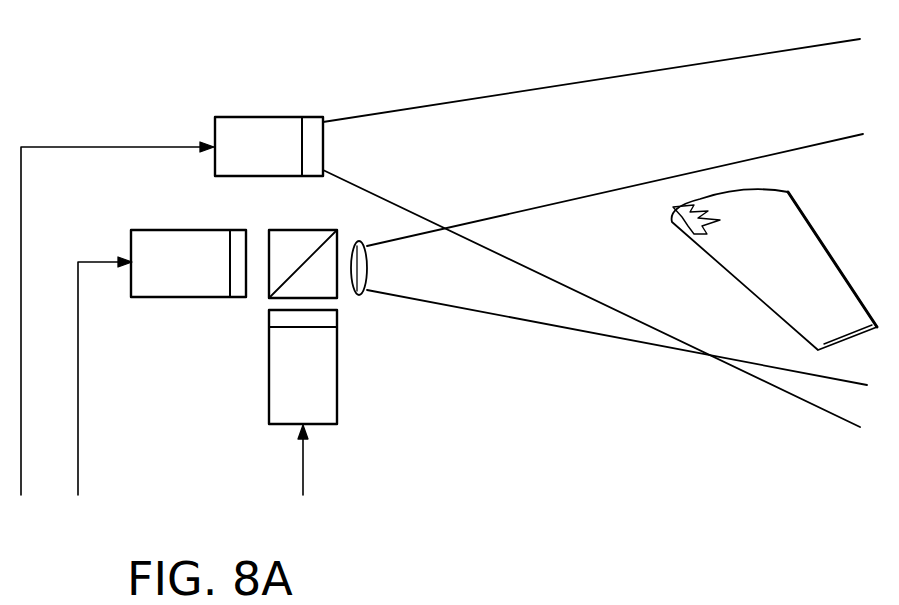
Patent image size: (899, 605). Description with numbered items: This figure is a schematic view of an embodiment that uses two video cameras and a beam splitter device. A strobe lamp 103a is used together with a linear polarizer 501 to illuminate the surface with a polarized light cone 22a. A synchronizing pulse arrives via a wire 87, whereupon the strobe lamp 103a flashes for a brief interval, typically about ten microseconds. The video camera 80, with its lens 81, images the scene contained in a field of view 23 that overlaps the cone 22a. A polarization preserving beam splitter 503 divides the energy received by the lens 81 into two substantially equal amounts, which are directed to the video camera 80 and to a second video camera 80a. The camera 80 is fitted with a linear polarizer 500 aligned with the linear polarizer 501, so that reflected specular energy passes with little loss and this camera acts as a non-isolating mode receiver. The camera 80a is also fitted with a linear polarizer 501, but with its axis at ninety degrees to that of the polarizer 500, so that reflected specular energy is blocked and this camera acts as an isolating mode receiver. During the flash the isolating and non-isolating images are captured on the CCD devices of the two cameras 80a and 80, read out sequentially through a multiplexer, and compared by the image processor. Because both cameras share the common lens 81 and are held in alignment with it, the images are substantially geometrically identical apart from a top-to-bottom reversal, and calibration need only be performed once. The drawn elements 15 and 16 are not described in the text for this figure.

The strobe lamp 103a is at (248, 125).
The linear polarizer 501 is at (310, 123).
The polarized light cone 22a is at (600, 79).
The wire 87 is at (22, 180).
The video camera 80 is at (170, 235).
The linear polarizer 500 is at (243, 235).
The polarization preserving beam splitter 503 is at (275, 235).
The lens 81 is at (365, 273).
The field of view 23 is at (543, 326).
The video camera 80a is at (325, 402).
The wing surface 15 is at (772, 293).
The ice 16 is at (682, 223).